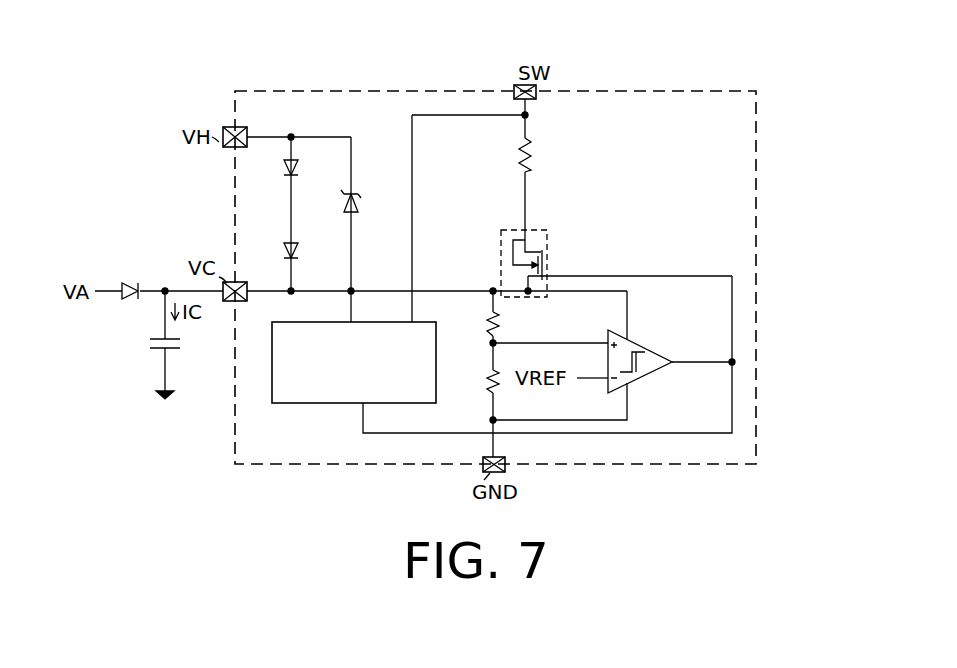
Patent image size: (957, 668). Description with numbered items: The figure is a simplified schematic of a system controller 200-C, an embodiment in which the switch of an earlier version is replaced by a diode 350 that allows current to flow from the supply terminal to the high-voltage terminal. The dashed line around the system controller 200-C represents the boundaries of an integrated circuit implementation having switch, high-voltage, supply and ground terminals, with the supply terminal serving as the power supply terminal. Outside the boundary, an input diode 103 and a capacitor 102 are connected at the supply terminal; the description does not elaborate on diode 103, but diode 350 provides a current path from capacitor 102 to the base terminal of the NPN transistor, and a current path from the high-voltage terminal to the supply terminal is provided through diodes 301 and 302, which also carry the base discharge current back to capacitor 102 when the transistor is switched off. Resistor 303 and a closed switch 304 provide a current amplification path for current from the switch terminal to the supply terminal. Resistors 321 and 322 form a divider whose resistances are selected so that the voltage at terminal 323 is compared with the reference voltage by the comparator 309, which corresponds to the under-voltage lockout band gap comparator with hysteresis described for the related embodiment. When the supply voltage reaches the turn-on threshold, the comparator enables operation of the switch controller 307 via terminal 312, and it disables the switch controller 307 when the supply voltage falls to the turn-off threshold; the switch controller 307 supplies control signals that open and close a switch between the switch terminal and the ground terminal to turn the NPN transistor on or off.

The diode 103 is at (128, 285).
The capacitor 102 is at (158, 349).
The diode 301 is at (298, 169).
The diode 302 is at (298, 252).
The diode 350 is at (358, 206).
The resistor 303 is at (530, 150).
The switch 304 is at (547, 262).
The resistor 321 is at (488, 332).
The resistor 322 is at (488, 376).
The terminal 323 is at (559, 337).
The comparator 309 is at (651, 372).
The terminal 312 is at (400, 433).
The switch controller 307 is at (334, 399).
The system controller 200-C is at (688, 91).